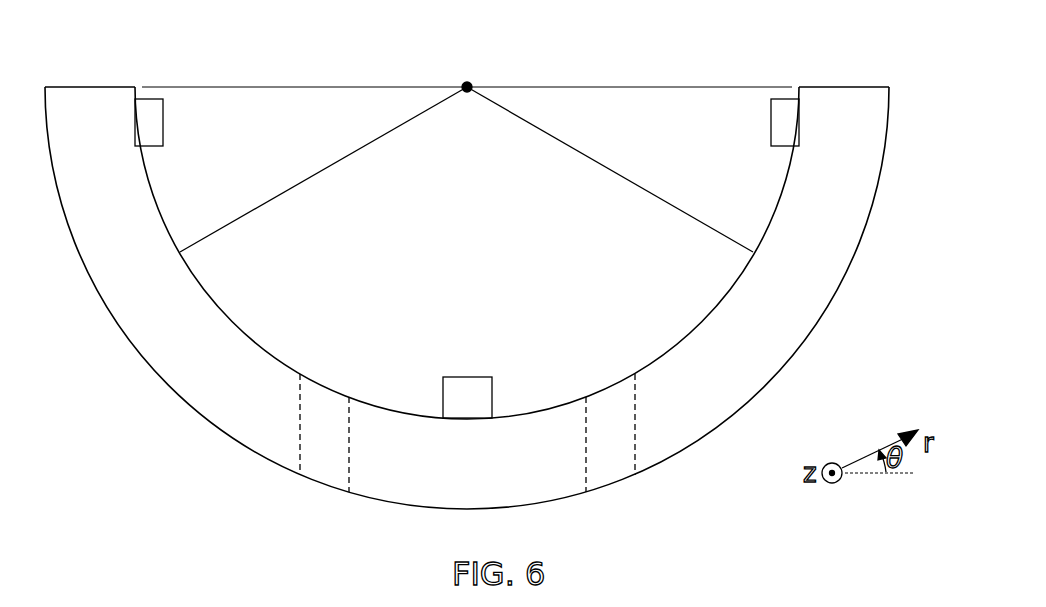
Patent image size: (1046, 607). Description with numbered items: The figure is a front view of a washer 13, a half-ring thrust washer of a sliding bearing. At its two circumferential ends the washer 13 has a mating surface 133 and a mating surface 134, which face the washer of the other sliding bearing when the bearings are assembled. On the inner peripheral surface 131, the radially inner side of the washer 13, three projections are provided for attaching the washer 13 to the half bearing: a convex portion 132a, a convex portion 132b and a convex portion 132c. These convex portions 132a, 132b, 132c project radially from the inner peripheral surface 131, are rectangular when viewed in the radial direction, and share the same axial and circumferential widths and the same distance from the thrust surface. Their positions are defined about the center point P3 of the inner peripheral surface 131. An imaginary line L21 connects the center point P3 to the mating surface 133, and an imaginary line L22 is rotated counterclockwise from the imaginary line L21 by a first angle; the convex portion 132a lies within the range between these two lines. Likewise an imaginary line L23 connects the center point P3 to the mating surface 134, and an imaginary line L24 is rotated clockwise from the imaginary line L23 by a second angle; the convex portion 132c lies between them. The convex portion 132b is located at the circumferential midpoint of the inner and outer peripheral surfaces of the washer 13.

The washer 13 is at (475, 259).
The inner peripheral surface 131 is at (690, 335).
The convex portion 132a is at (155, 120).
The convex portion 132b is at (467, 393).
The convex portion 132c is at (778, 120).
The mating surface 133 is at (73, 86).
The mating surface 134 is at (862, 86).
The imaginary line L21 is at (346, 86).
The imaginary line L22 is at (325, 172).
The imaginary line L23 is at (590, 85).
The imaginary line L24 is at (606, 172).
The center point P3 is at (468, 82).